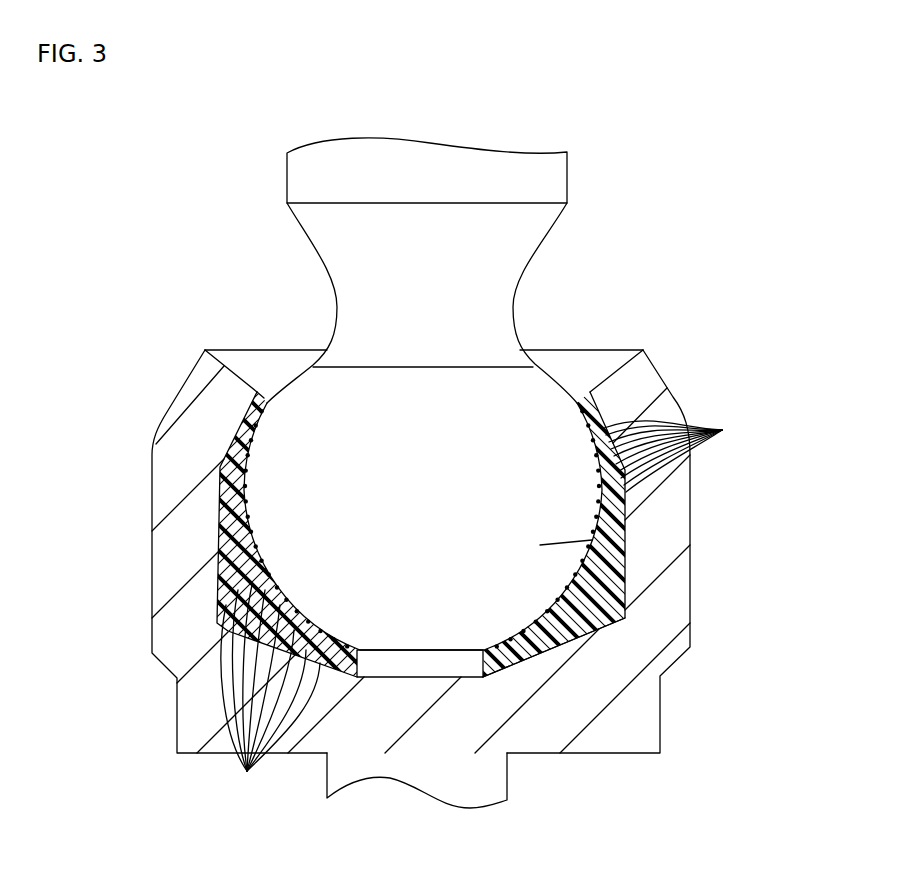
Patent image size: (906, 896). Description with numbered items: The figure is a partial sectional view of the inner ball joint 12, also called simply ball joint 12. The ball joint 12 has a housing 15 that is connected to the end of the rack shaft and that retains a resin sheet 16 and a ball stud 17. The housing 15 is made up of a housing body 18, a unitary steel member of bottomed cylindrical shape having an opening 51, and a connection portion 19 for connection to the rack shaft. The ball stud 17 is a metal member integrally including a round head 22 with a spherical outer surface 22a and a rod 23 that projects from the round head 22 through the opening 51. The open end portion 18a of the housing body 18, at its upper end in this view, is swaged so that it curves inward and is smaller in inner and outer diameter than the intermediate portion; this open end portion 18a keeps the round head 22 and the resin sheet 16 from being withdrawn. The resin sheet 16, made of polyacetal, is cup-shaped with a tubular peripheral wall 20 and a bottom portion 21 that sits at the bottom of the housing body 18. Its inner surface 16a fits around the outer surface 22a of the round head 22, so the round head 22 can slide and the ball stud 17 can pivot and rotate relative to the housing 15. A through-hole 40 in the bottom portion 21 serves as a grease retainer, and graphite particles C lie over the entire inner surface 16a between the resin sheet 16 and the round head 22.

The inner ball joint 12 is at (152, 138).
The housing 15 is at (150, 557).
The resin sheet 16 is at (214, 594).
The inner surface 16a is at (575, 580).
The ball stud 17 is at (570, 166).
The housing body 18 is at (414, 529).
The open end portion 18a is at (645, 388).
The connection portion 19 is at (490, 782).
The peripheral wall 20 is at (618, 527).
The bottom portion 21 is at (577, 625).
The round head 22 is at (533, 579).
The outer surface 22a is at (545, 605).
The rod 23 is at (507, 272).
The through-hole 40 is at (396, 665).
The opening 51 is at (612, 331).
The graphite particles C is at (481, 606).